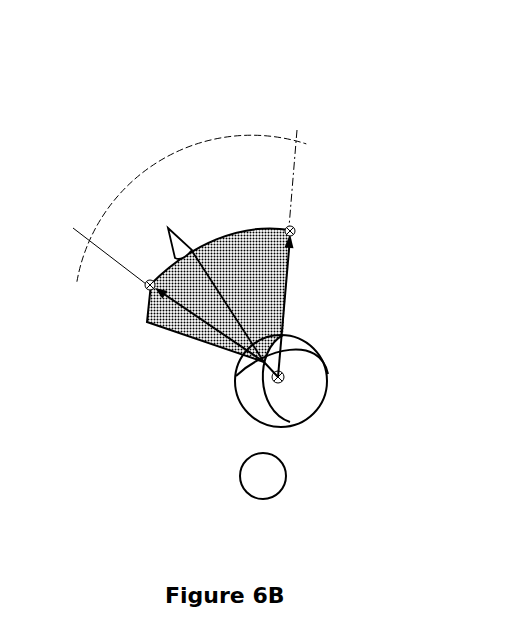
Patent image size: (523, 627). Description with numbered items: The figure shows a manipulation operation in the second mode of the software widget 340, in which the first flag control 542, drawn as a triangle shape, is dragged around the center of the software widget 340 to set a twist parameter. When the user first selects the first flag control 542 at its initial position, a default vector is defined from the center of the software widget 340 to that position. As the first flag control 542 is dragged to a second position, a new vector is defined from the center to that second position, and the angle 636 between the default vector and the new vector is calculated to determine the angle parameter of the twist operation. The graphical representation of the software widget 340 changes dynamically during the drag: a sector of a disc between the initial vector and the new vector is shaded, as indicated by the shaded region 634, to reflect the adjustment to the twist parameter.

The software widget 340 is at (392, 68).
The angle (β) 636 is at (143, 168).
The shaded spherical sector region 634 is at (242, 227).
The first flag control 542 is at (147, 323).